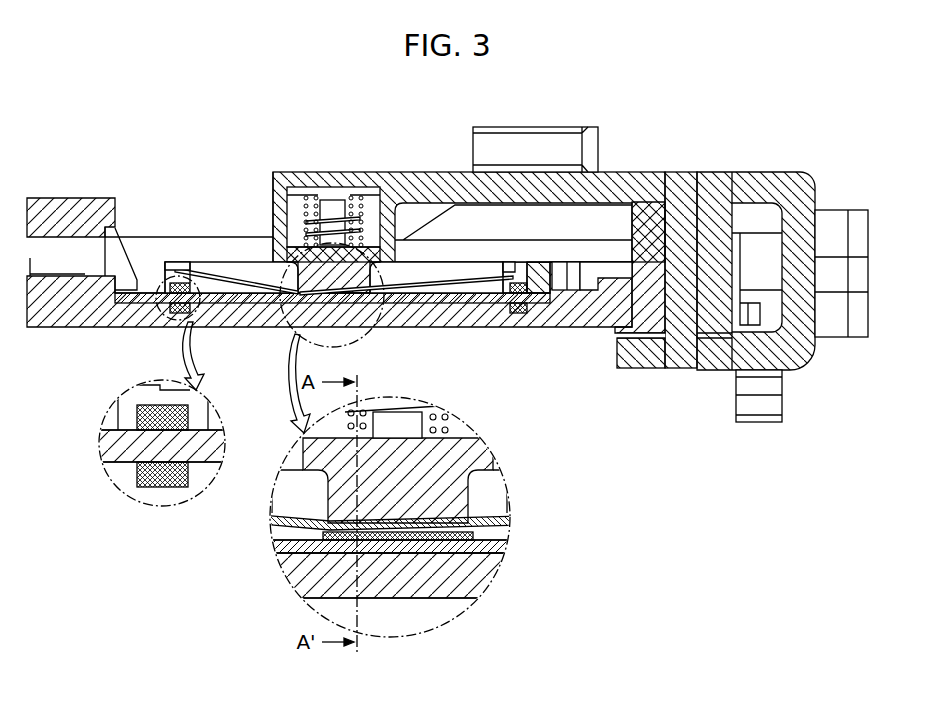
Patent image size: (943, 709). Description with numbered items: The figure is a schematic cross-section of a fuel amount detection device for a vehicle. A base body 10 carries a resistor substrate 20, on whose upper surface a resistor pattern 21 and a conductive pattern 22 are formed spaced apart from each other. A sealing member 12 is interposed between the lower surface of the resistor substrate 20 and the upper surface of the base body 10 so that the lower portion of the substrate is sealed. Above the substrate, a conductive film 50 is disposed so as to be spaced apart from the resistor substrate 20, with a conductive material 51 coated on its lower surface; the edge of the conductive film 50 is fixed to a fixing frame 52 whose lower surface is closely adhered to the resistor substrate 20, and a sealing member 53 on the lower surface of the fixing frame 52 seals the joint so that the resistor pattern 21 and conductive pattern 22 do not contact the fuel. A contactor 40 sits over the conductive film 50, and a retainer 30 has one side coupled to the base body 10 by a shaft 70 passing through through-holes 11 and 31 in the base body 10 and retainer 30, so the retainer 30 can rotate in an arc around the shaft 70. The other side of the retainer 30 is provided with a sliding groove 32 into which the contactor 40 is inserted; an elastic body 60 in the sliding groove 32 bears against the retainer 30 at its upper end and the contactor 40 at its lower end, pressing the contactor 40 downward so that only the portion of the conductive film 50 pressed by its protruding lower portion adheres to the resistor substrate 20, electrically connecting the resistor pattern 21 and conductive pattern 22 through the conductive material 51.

The base body 10 is at (552, 323).
The through-hole 11 is at (703, 235).
The sealing member 12 is at (140, 478).
The resistor substrate 20 is at (455, 300).
The resistor pattern 21 is at (370, 540).
The conductive pattern 22 is at (440, 553).
The retainer 30 is at (768, 180).
The through-hole 31 is at (708, 190).
The sliding groove 32 is at (273, 197).
The contactor 40 is at (462, 494).
The conductive film 50 is at (400, 297).
The conductive material 51 is at (470, 537).
The fixing frame 52 is at (165, 282).
The sealing member 53 is at (138, 414).
The elastic body 60 is at (360, 190).
The shaft 70 is at (681, 178).